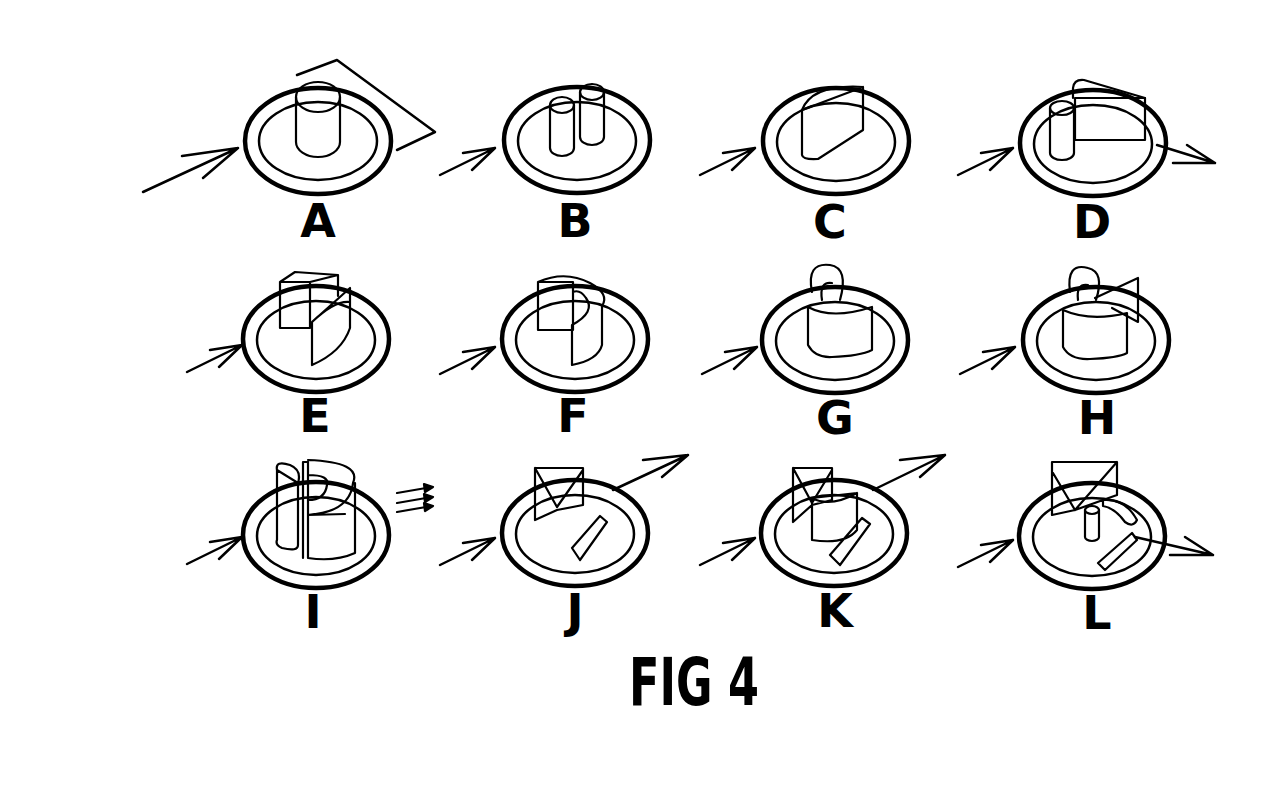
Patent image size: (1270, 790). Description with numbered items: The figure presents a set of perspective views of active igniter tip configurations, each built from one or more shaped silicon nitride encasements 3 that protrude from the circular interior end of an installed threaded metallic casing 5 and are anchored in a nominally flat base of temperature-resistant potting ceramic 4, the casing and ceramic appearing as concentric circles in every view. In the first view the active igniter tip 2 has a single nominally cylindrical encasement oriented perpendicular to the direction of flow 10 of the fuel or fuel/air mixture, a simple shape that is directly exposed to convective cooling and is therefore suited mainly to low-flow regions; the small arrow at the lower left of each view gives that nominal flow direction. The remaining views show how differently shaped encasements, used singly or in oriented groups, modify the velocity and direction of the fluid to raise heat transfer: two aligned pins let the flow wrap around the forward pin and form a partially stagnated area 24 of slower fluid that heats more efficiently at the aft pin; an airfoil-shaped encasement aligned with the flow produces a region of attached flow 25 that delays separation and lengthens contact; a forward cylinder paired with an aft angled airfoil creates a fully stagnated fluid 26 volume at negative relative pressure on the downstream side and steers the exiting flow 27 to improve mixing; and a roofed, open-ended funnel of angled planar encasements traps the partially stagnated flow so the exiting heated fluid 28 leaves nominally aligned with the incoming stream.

The active igniter tip 2 is at (383, 92).
The silicon nitride encasement 3 is at (308, 100).
The potting ceramic 4 is at (300, 160).
The threaded metallic casing 5 is at (277, 132).
The direction of flow 10 is at (200, 147).
The partially stagnated area 24 is at (575, 120).
The region of attached flow 25 is at (828, 127).
The fully stagnated fluid volume 26 is at (1140, 92).
The exiting flow 27 is at (1197, 138).
The direction of exiting heated fluid 28 is at (638, 483).